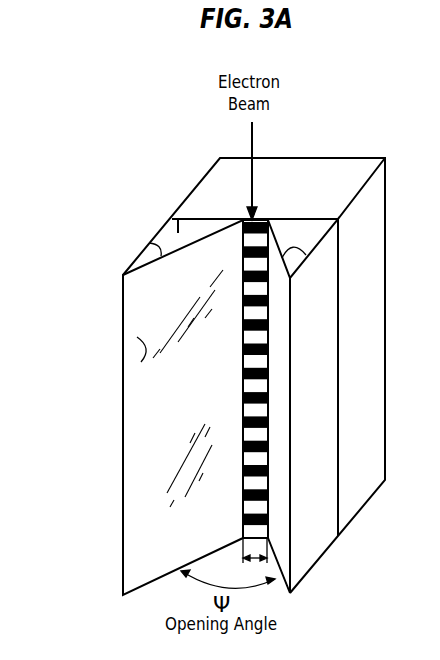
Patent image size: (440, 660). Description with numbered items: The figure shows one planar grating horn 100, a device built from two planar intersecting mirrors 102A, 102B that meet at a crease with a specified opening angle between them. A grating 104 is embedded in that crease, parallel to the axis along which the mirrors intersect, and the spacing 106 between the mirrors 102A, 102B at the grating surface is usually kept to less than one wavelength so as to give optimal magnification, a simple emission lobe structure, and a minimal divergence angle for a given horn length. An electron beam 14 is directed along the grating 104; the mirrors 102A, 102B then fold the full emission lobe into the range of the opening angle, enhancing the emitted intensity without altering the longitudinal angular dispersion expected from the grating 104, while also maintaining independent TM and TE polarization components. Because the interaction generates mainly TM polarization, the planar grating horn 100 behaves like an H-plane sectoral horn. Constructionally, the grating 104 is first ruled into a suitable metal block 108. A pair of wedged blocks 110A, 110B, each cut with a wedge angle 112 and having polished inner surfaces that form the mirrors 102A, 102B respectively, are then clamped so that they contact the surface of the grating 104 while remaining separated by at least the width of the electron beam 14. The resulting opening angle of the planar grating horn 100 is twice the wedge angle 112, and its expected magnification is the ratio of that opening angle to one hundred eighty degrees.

The electron beam 14 is at (254, 149).
The planar grating horn 100 is at (58, 499).
The first planar mirror 102A is at (145, 358).
The second planar mirror 102B is at (278, 482).
The grating 104 is at (238, 389).
The spacing 106 is at (250, 562).
The metal block 108 is at (386, 178).
The first wedged block 110A is at (179, 218).
The second wedged block 110B is at (308, 546).
The wedge angle 112 is at (152, 243).